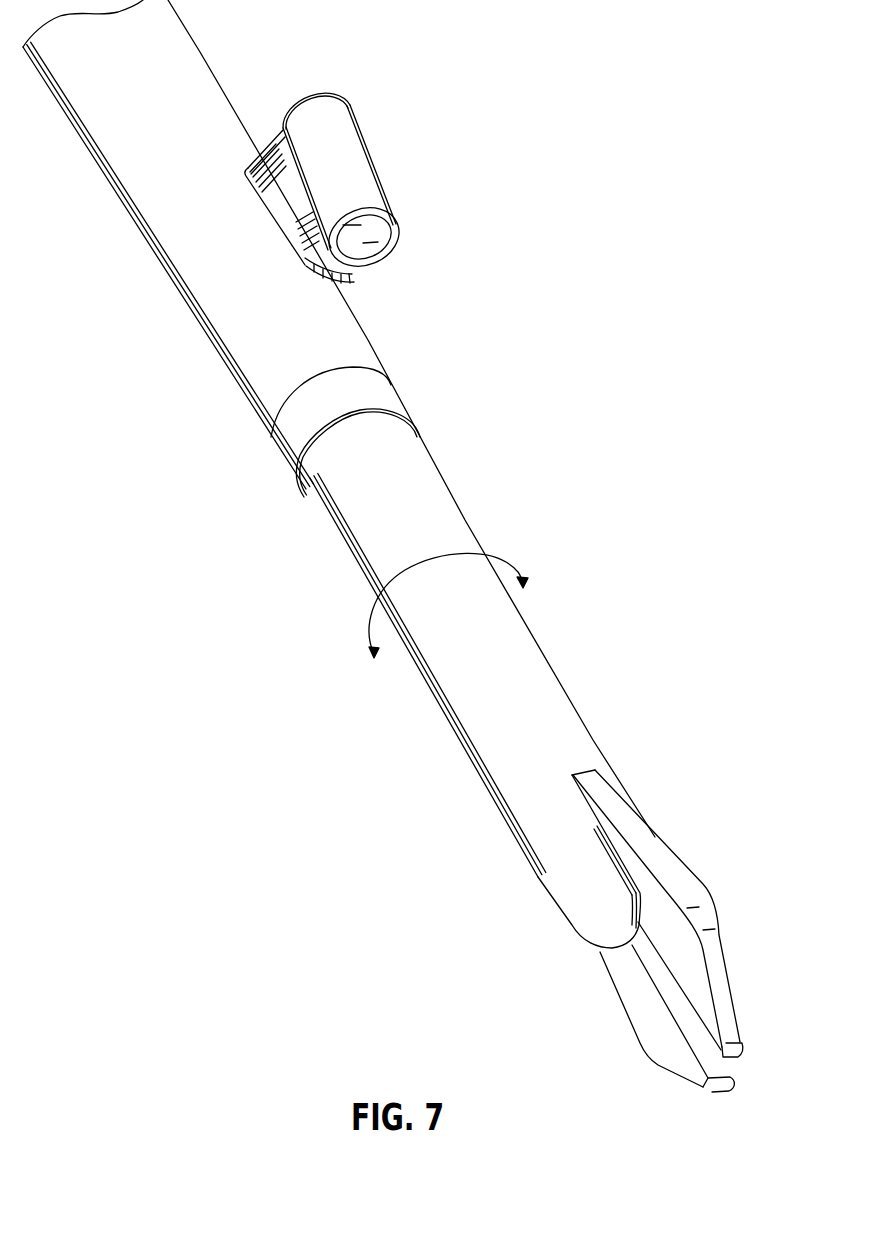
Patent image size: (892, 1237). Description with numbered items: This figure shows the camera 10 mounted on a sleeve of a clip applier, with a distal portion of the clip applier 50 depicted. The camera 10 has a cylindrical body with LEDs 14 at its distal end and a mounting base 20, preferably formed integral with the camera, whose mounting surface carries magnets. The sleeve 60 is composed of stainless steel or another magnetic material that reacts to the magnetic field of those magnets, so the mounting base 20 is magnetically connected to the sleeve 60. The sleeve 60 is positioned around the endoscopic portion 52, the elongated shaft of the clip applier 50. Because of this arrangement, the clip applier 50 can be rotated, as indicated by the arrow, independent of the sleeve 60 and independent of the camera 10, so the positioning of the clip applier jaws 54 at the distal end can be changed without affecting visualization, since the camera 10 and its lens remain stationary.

The camera 10 is at (362, 150).
The LEDs 14 is at (345, 280).
The mounting base 20 is at (277, 197).
The clip applier 50 is at (455, 700).
The endoscopic portion 52 is at (348, 493).
The clip applier jaws 54 is at (643, 1008).
The sleeve 60 is at (243, 353).